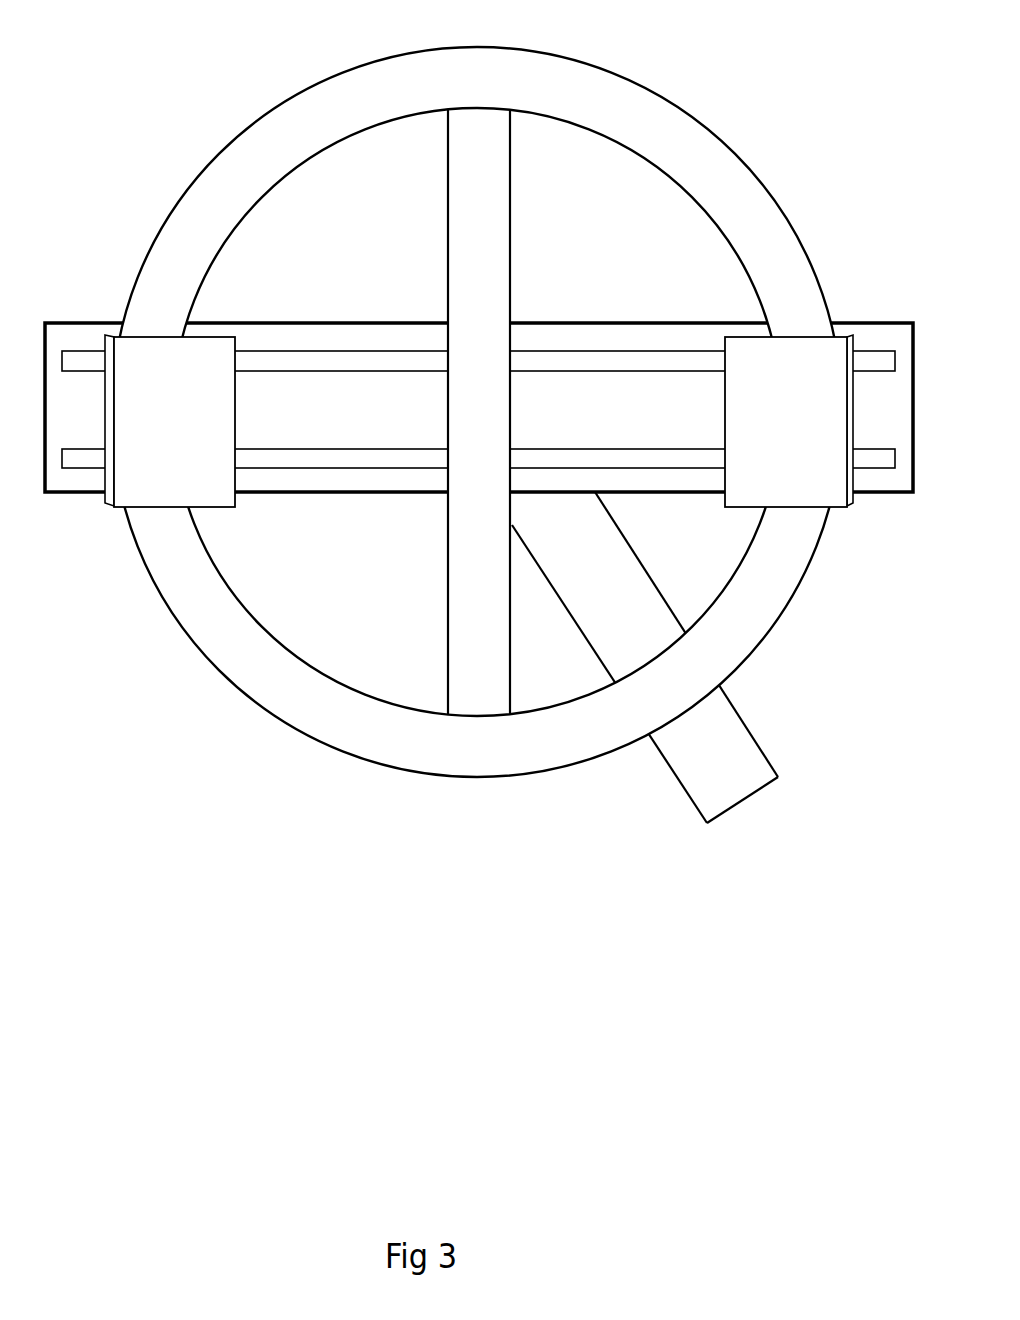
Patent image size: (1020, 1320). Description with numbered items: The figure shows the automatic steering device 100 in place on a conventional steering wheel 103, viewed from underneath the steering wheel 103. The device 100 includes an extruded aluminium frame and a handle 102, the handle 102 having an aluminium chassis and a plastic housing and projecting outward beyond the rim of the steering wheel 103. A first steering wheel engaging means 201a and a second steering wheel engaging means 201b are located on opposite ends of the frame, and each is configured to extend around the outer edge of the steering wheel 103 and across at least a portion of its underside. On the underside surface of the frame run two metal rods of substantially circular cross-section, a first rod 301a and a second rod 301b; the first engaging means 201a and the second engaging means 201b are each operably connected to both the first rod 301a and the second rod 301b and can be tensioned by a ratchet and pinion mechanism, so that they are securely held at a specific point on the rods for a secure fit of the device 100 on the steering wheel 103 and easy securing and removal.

The automatic steering device 100 is at (462, 343).
The handle 102 is at (661, 695).
The steering wheel 103 is at (477, 456).
The first steering wheel engaging means 201a is at (131, 468).
The second steering wheel engaging means 201b is at (827, 468).
The first rod 301a is at (478, 528).
The second rod 301b is at (478, 290).